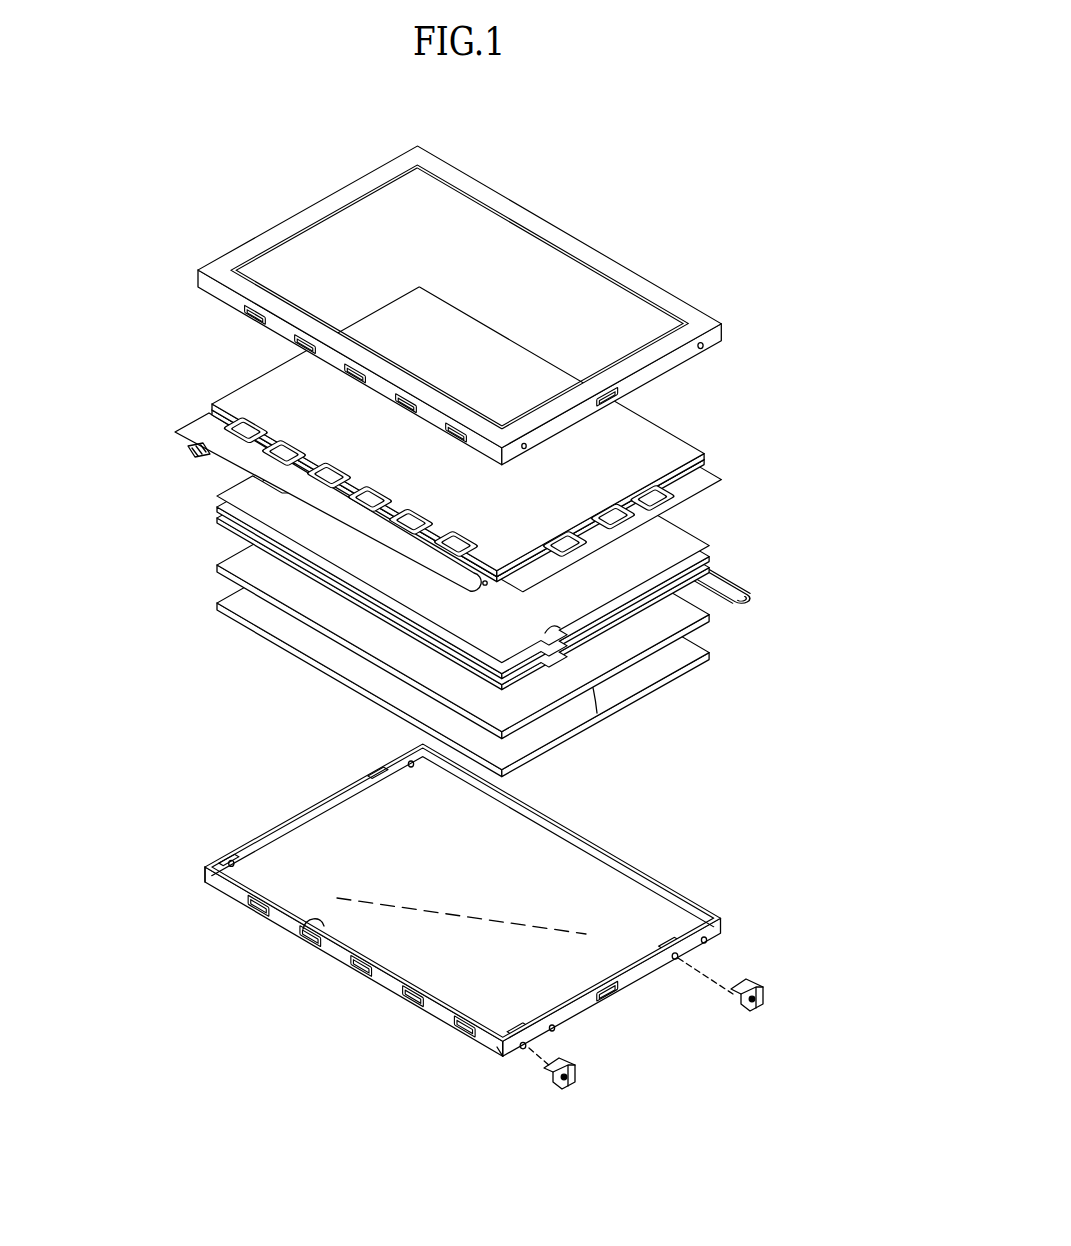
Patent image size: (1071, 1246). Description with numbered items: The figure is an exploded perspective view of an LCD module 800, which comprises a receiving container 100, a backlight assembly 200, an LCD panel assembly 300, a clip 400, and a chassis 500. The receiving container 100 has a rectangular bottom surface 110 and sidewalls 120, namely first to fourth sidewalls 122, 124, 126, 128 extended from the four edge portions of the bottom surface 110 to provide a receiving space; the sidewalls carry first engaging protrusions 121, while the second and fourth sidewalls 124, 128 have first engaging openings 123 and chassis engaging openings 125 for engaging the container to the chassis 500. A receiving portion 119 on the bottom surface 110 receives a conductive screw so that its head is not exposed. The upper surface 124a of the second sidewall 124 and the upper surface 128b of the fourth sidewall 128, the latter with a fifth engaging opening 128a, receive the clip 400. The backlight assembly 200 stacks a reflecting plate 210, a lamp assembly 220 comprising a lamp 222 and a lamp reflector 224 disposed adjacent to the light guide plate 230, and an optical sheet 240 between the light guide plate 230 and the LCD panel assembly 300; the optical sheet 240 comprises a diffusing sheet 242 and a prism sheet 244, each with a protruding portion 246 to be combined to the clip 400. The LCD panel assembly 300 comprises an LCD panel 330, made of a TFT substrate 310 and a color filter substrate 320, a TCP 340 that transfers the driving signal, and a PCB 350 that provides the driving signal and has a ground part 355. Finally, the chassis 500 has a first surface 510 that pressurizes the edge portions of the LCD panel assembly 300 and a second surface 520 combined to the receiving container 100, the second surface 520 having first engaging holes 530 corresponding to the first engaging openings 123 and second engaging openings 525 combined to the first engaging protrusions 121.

The LCD module 800 is at (593, 187).
The chassis 500 is at (650, 271).
The first surface 510 is at (290, 312).
The second surface 520 is at (270, 322).
The second engaging openings 525 is at (622, 394).
The first engaging holes 530 is at (703, 350).
The LCD panel assembly 300 is at (193, 402).
The LCD panel 330 is at (767, 402).
The color filter substrate 320 is at (682, 450).
The TFT substrate 310 is at (704, 462).
The TCP 340 is at (690, 490).
The PCB 350 is at (180, 436).
The ground part 355 is at (486, 587).
The backlight assembly 200 is at (100, 463).
The optical sheet 240 is at (148, 462).
The prism sheet 244 is at (222, 495).
The diffusing sheet 242 is at (207, 510).
The protruding portion 246 is at (633, 688).
The light guide plate 230 is at (585, 690).
The lamp assembly 220 is at (760, 608).
The lamp 222 is at (745, 610).
The lamp reflector 224 is at (745, 585).
The reflecting plate 210 is at (557, 752).
The receiving container 100 is at (322, 958).
The bottom surface 110 is at (380, 798).
The sidewalls 120 is at (637, 866).
The first engaging protrusions 121 is at (390, 993).
The first sidewall 122 is at (670, 905).
The first engaging openings 123 is at (720, 932).
The second sidewall 124 is at (317, 812).
The upper surface 124a is at (267, 833).
The chassis engaging openings 125 is at (675, 959).
The third sidewall 126 is at (292, 929).
The fourth sidewall 128 is at (607, 976).
The fifth engaging opening 128a is at (568, 998).
The upper surface 128b is at (492, 1048).
The receiving portion 119 is at (523, 1025).
The clip 400 is at (583, 1068).